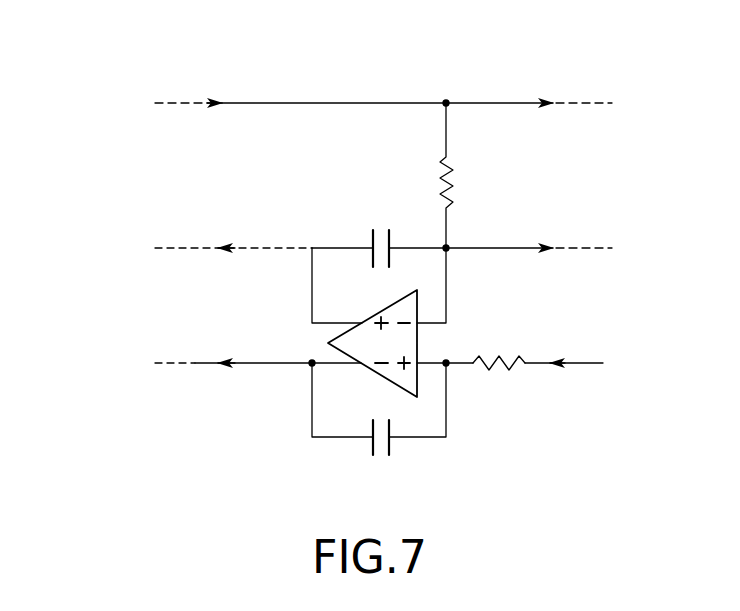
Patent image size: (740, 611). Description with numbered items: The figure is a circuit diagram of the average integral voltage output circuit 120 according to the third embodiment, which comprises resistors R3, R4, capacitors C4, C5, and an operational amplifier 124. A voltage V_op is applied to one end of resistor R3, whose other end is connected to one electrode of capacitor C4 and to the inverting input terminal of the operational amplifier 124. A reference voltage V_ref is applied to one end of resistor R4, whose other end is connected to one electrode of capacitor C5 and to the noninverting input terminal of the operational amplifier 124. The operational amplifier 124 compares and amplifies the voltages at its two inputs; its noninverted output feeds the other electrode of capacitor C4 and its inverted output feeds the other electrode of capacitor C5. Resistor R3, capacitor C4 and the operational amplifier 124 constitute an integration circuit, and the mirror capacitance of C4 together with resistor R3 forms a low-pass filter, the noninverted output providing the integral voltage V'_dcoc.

The average integral voltage output circuit 120 is at (118, 85).
The operational amplifier 124 is at (420, 338).
The resistor R3 is at (464, 175).
The resistor R4 is at (499, 382).
The capacitor C4 is at (383, 233).
The capacitor C5 is at (382, 457).